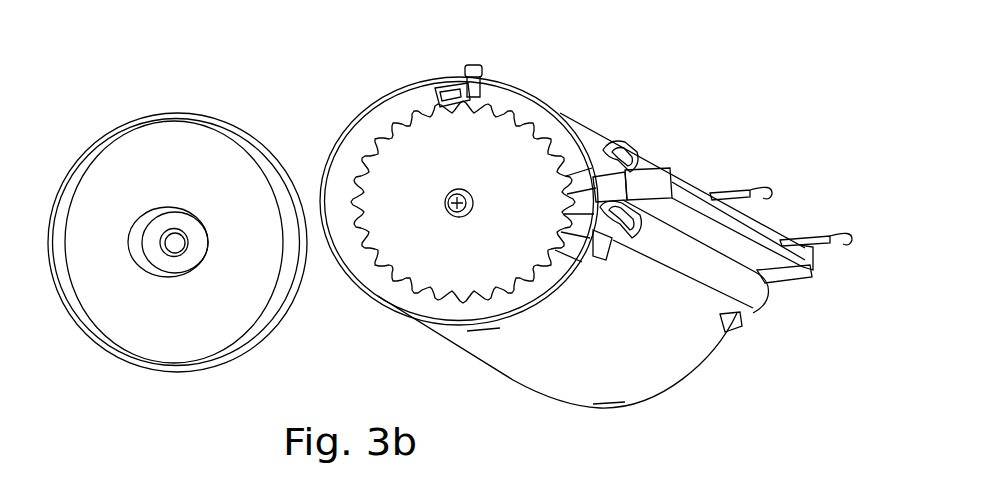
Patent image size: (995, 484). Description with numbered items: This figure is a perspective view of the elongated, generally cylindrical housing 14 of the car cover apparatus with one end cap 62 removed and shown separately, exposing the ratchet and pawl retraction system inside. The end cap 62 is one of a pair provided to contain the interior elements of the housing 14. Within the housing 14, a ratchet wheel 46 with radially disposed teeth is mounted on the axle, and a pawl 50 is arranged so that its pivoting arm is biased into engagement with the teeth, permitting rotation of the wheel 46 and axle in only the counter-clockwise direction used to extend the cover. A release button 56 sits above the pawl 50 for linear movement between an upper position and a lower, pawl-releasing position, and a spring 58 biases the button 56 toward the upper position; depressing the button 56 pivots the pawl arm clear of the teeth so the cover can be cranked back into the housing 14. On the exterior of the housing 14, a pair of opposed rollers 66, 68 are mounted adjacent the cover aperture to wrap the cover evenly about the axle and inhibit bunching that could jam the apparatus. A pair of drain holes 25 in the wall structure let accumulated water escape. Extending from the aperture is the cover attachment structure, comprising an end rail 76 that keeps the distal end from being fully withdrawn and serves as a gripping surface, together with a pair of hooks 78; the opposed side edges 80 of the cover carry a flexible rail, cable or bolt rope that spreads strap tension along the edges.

The housing 14 is at (622, 334).
The drain holes 25 is at (480, 330).
The ratchet wheel 46 is at (443, 169).
The pawl 50 is at (425, 95).
The release button 56 is at (478, 65).
The spring 58 is at (482, 75).
The end cap 62 is at (176, 180).
The roller 66 is at (743, 293).
The roller 68 is at (622, 150).
The end rail 76 is at (762, 233).
The hooks 78 is at (748, 185).
The side edges 80 is at (652, 182).